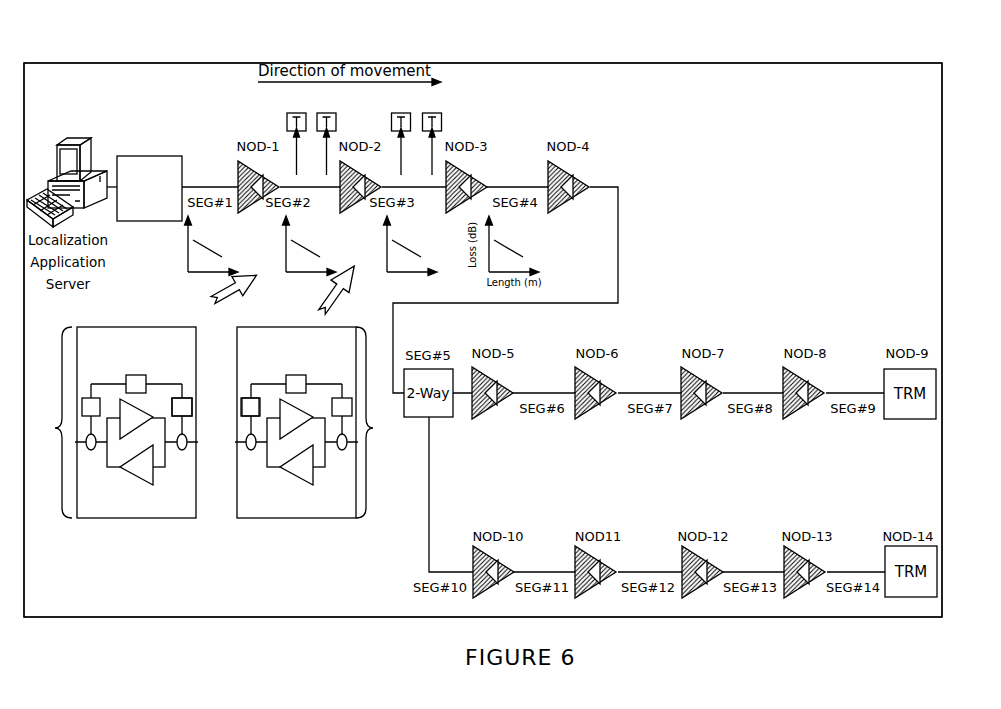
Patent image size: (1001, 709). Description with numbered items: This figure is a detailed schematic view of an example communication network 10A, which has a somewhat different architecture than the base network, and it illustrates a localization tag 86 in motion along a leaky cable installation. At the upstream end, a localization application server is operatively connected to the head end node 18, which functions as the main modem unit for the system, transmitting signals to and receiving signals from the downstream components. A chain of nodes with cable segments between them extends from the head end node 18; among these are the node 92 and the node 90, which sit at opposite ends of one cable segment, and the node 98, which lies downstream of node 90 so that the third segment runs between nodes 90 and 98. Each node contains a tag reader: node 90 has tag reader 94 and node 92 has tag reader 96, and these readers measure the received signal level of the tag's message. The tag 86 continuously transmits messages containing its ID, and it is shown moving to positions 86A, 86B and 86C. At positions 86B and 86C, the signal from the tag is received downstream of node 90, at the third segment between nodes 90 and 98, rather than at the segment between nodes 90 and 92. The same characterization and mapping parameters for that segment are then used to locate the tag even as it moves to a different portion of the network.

The network 10A is at (740, 617).
The head end node 18 is at (145, 156).
The localization tag 86 is at (297, 112).
The tag position 86A is at (326, 113).
The tag position 86B is at (401, 112).
The tag position 86C is at (433, 113).
The node 90 is at (342, 212).
The node 92 is at (238, 168).
The tag reader 94 is at (241, 413).
The tag reader 96 is at (192, 398).
The node 98 is at (468, 173).